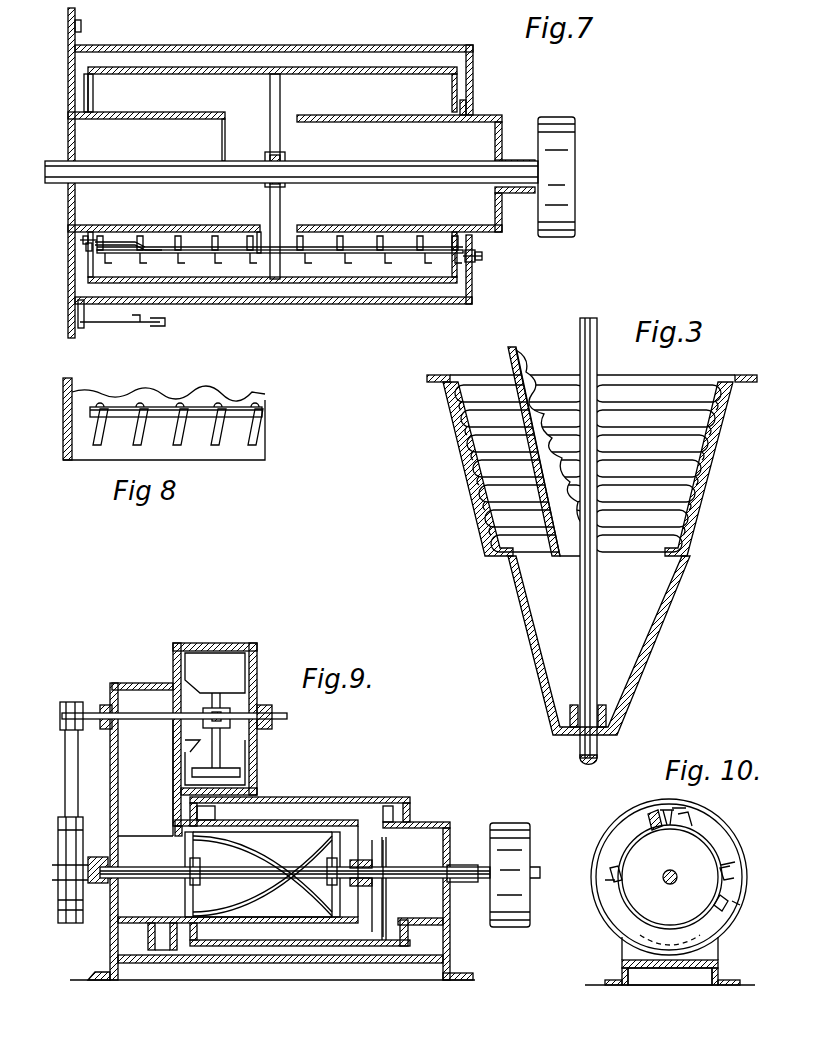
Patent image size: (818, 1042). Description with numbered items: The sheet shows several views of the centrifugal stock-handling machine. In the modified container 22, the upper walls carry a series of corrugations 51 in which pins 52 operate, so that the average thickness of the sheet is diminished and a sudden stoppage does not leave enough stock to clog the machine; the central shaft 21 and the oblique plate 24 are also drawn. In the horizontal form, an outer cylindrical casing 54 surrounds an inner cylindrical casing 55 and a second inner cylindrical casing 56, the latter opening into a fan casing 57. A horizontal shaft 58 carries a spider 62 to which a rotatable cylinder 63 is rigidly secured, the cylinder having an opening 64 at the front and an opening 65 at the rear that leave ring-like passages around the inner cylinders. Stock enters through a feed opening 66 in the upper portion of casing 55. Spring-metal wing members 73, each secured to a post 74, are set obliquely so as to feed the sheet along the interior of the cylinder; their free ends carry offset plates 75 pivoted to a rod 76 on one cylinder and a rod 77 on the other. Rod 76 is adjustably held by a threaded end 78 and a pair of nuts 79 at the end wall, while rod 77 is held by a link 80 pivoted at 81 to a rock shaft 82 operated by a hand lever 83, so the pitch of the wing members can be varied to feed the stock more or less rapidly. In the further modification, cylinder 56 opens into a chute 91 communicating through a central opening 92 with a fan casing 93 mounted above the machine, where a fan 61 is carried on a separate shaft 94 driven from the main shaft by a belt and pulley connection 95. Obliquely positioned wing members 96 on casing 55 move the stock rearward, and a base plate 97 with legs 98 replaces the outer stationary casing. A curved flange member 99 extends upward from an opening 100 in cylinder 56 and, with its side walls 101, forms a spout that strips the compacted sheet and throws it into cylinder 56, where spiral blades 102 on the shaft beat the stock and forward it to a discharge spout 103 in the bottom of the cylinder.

In FIG. 3, the shaft 21 is at (585, 585).
In FIG. 3, the container 22 is at (655, 622).
In FIG. 3, the baffle plate 24 is at (470, 497).
In FIG. 3, the corrugations 51 is at (455, 447).
In FIG. 3, the pins 52 is at (450, 420).
In FIG. 7, the outer cylindrical casing 54 is at (265, 45).
In FIG. 7, the inner cylindrical casing 55 is at (350, 115).
In FIG. 9, the inner cylindrical casing 55 is at (425, 930).
In FIG. 7, the second inner cylindrical casing 56 is at (100, 118).
In FIG. 9, the second inner cylindrical casing 56 is at (330, 950).
In FIG. 10, the second inner cylindrical casing 56 is at (632, 843).
In FIG. 7, the fan casing 57 is at (70, 285).
In FIG. 7, the horizontal shaft 58 is at (470, 160).
In FIG. 9, the horizontal shaft 58 is at (170, 882).
In FIG. 10, the horizontal shaft 58 is at (668, 872).
In FIG. 9, the fan 61 is at (195, 660).
In FIG. 7, the spider 62 is at (268, 152).
In FIG. 9, the spider 62 is at (360, 858).
In FIG. 7, the cylinder 63 is at (312, 67).
In FIG. 9, the cylinder 63 is at (365, 945).
In FIG. 10, the cylinder 63 is at (600, 900).
In FIG. 7, the opening 64 is at (455, 93).
In FIG. 7, the opening 65 is at (84, 94).
In FIG. 9, the opening 65 is at (185, 812).
In FIG. 9, the feed opening 66 is at (432, 822).
In FIG. 8, the wing members 73 is at (95, 412).
In FIG. 7, the post 74 is at (215, 240).
In FIG. 8, the offset plates 75 is at (183, 407).
In FIG. 7, the rod 76 is at (352, 255).
In FIG. 7, the rod 77 is at (200, 255).
In FIG. 8, the rod 77 is at (198, 407).
In FIG. 7, the threaded end 78 is at (478, 256).
In FIG. 7, the nuts 79 is at (478, 262).
In FIG. 7, the link 80 is at (108, 243).
In FIG. 7, the pivot 81 is at (85, 252).
In FIG. 7, the rock shaft 82 is at (80, 238).
In FIG. 7, the hand lever 83 is at (100, 325).
In FIG. 9, the chute 91 is at (112, 785).
In FIG. 9, the central opening 92 is at (175, 708).
In FIG. 9, the fan casing 93 is at (255, 668).
In FIG. 9, the shaft 94 is at (91, 708).
In FIG. 9, the belt and pulley connection 95 is at (63, 772).
In FIG. 9, the wing members 96 is at (390, 812).
In FIG. 9, the base plate 97 is at (270, 965).
In FIG. 10, the base plate 97 is at (652, 968).
In FIG. 9, the legs 98 is at (110, 940).
In FIG. 10, the legs 98 is at (620, 948).
In FIG. 9, the curved flange member 99 is at (232, 800).
In FIG. 10, the curved flange member 99 is at (658, 800).
In FIG. 10, the opening 100 is at (690, 838).
In FIG. 10, the side walls 101 is at (648, 820).
In FIG. 9, the spiral blades 102 is at (225, 905).
In FIG. 9, the discharge spout 103 is at (235, 847).